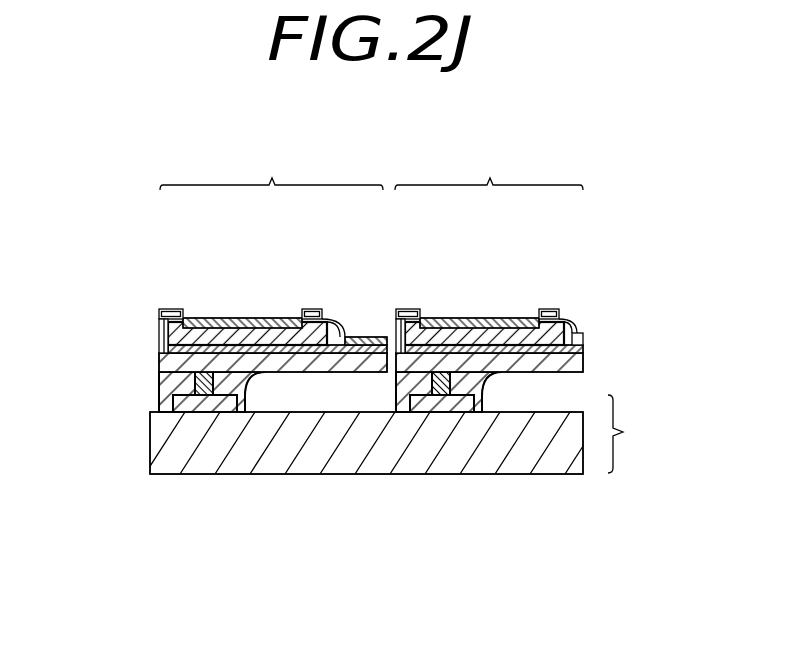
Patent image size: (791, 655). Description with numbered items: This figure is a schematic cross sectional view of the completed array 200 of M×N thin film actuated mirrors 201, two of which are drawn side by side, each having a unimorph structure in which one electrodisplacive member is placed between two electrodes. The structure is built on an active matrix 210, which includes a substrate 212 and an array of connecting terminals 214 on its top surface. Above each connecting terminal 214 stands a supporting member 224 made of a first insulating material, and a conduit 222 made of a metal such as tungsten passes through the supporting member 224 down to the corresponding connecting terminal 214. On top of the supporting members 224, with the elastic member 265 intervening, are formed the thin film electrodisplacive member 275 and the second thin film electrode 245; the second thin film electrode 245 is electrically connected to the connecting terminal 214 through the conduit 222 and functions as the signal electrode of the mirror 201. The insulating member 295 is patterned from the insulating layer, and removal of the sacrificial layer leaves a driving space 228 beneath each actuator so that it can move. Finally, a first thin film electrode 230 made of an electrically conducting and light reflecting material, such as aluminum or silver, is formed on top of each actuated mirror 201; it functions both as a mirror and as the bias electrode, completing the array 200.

The array of thin film actuated mirrors 200 is at (660, 113).
The thin film actuated mirror 201 is at (371, 164).
The active matrix 210 is at (650, 434).
The substrate 212 is at (347, 462).
The connecting terminal 214 is at (217, 400).
The conduit 222 is at (203, 387).
The supporting member 224 is at (241, 378).
The driving space 228 is at (287, 400).
The first thin film electrode 230 is at (342, 337).
The second thin film electrode 245 is at (213, 345).
The elastic member 265 is at (165, 357).
The thin film electrodisplacive member 275 is at (177, 311).
The insulating member 295 is at (165, 325).